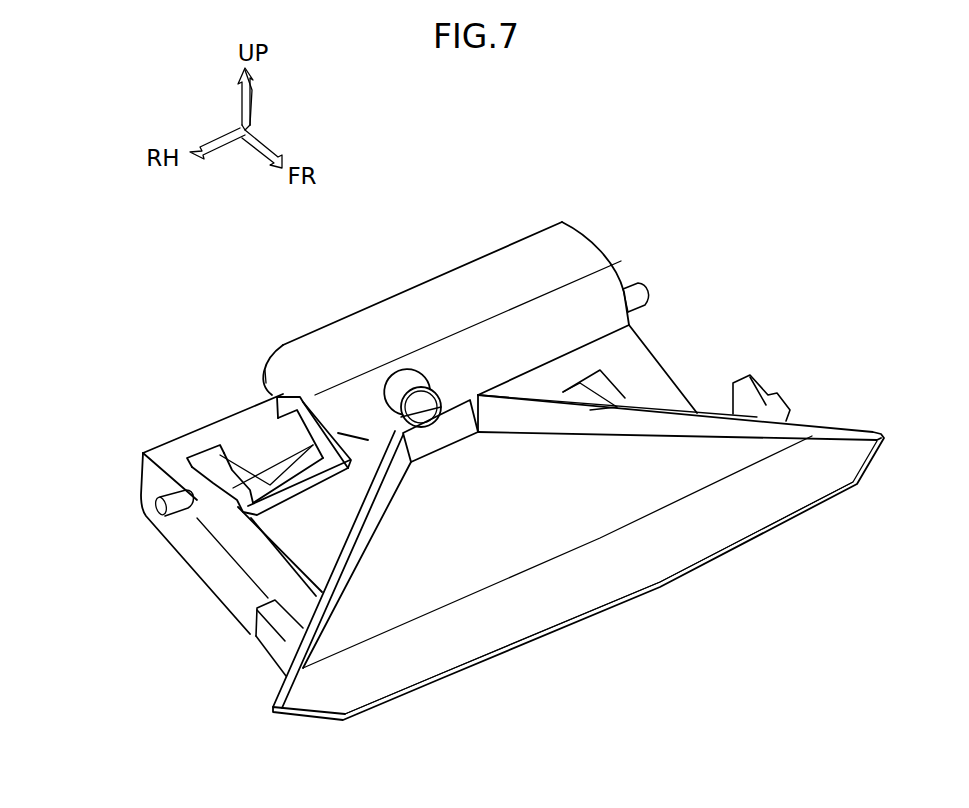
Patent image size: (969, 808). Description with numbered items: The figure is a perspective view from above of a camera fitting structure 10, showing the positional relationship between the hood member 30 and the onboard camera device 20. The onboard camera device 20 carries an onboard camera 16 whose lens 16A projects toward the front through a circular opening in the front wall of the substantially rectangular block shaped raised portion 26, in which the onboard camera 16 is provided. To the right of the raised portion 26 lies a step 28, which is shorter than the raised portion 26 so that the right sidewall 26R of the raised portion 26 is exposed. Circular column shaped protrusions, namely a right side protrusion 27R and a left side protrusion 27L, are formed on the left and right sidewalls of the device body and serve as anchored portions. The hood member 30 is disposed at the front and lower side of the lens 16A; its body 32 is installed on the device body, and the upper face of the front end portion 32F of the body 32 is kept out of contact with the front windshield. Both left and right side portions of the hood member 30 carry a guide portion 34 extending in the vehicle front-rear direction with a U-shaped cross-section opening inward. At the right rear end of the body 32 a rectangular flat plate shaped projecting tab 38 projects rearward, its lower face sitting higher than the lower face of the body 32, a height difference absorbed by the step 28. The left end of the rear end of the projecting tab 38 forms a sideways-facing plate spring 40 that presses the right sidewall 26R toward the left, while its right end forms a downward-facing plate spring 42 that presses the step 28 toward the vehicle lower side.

The lamp device 10 is at (752, 230).
The onboard camera 16 is at (429, 370).
The lens 16A is at (404, 378).
The onboard camera device 20 is at (554, 218).
The raised portion 26 is at (570, 258).
The right sidewall 26R is at (265, 370).
The left side protrusion 27L is at (649, 292).
The right side protrusion 27R is at (157, 514).
The step 28 is at (233, 427).
The hood member 30 is at (707, 384).
The body 32 is at (625, 490).
The front end portion 32F is at (593, 577).
The guide portion 34 is at (750, 377).
The projecting tab 38 is at (295, 532).
The sideways-facing plate spring 40 is at (337, 430).
The downward-facing plate spring 42 is at (207, 457).